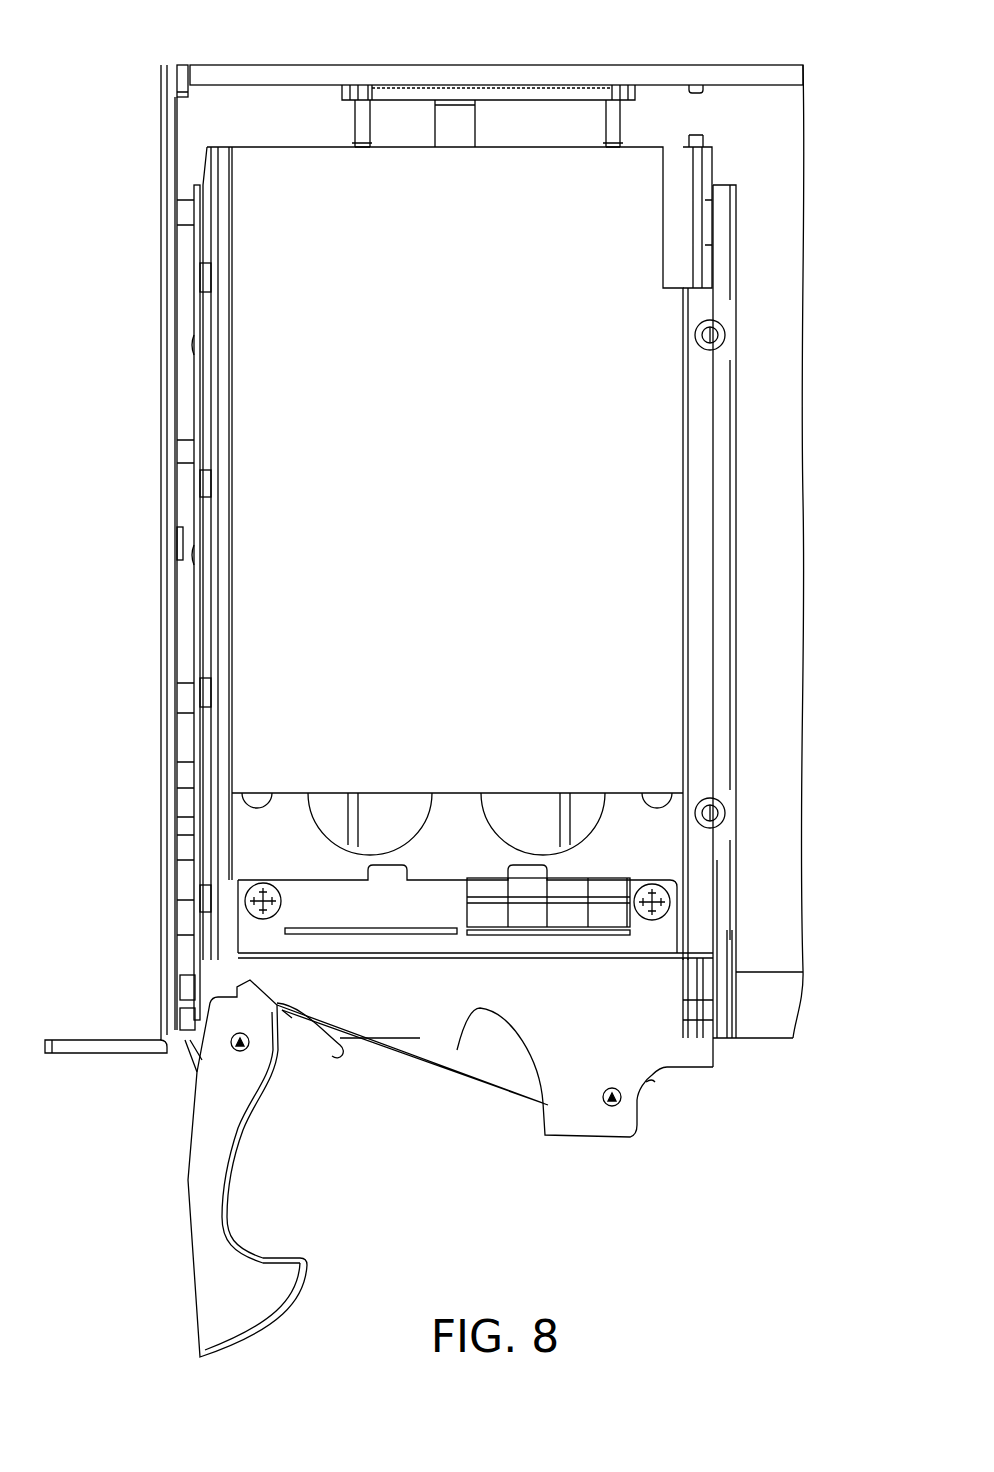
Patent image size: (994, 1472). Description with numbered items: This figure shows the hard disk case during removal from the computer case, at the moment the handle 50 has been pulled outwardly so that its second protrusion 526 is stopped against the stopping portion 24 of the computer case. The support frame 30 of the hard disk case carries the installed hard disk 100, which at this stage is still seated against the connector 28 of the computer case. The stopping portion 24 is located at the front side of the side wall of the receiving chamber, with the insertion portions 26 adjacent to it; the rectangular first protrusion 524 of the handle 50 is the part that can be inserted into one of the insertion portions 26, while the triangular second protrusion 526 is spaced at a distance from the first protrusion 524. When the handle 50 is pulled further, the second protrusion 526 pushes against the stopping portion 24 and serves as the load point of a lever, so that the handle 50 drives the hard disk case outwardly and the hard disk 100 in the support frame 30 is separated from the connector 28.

The hard disk 100 is at (652, 147).
The connector 28 is at (340, 97).
The support frame 30 is at (203, 172).
The insertion portions 26 is at (187, 988).
The stopping portion 24 is at (183, 1023).
The handle 50 is at (182, 1188).
The first protrusion 524 is at (243, 985).
The second protrusion 526 is at (190, 1055).